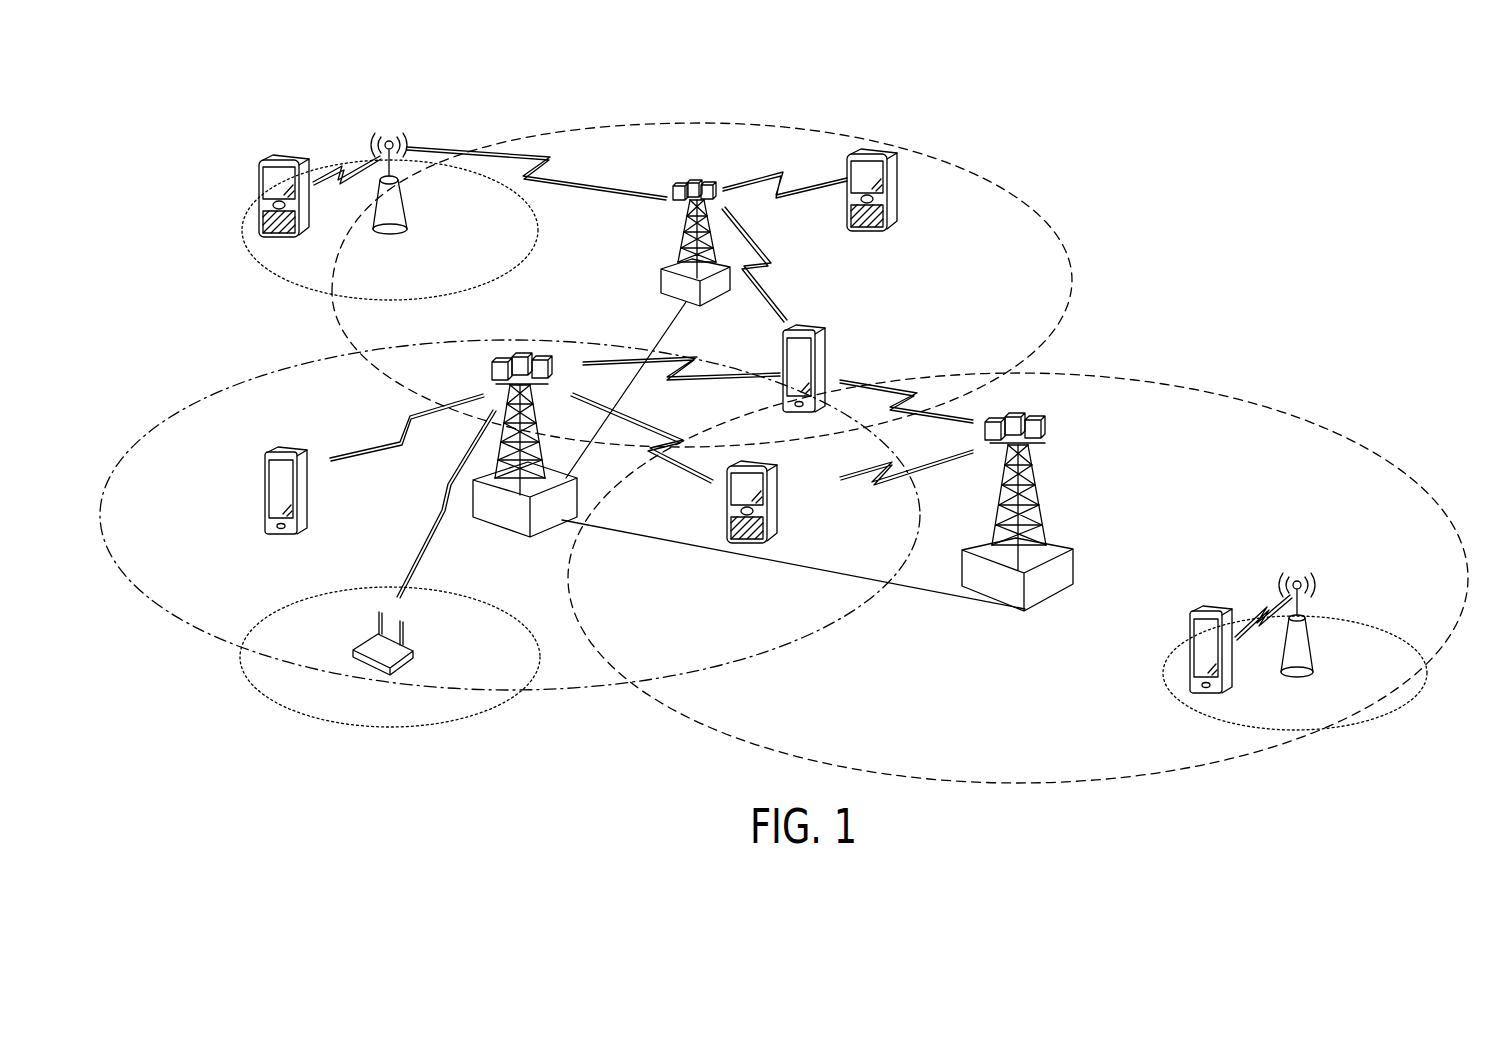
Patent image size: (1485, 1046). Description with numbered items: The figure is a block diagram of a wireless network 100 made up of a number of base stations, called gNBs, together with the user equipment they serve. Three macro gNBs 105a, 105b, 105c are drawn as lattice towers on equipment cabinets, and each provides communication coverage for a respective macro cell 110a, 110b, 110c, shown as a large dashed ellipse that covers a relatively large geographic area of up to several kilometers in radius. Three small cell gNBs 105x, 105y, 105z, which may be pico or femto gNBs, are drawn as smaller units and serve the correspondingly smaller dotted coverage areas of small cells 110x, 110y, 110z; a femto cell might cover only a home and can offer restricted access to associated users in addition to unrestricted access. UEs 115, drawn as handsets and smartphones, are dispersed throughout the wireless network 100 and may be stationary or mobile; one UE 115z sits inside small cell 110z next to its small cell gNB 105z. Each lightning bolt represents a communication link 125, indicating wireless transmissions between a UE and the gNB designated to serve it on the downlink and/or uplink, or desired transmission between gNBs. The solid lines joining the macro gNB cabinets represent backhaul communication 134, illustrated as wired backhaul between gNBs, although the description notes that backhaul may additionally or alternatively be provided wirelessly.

The wireless network 100 is at (1185, 163).
The macro gNB 105a is at (513, 538).
The macro gNB 105b is at (660, 280).
The macro gNB 105c is at (1053, 606).
The small cell gNB 105x is at (416, 660).
The small cell gNB 105y is at (410, 228).
The small cell gNB 105z is at (1316, 666).
The macro cell 110a is at (222, 386).
The macro cell 110b is at (897, 137).
The macro cell 110c is at (1240, 392).
The small cell 110x is at (312, 735).
The small cell 110y is at (292, 282).
The small cell 110z is at (1393, 716).
The UEs 115 is at (259, 170).
The UE 115z is at (1190, 628).
The communication links 125 is at (343, 166).
The backhaul communication 134 is at (666, 326).